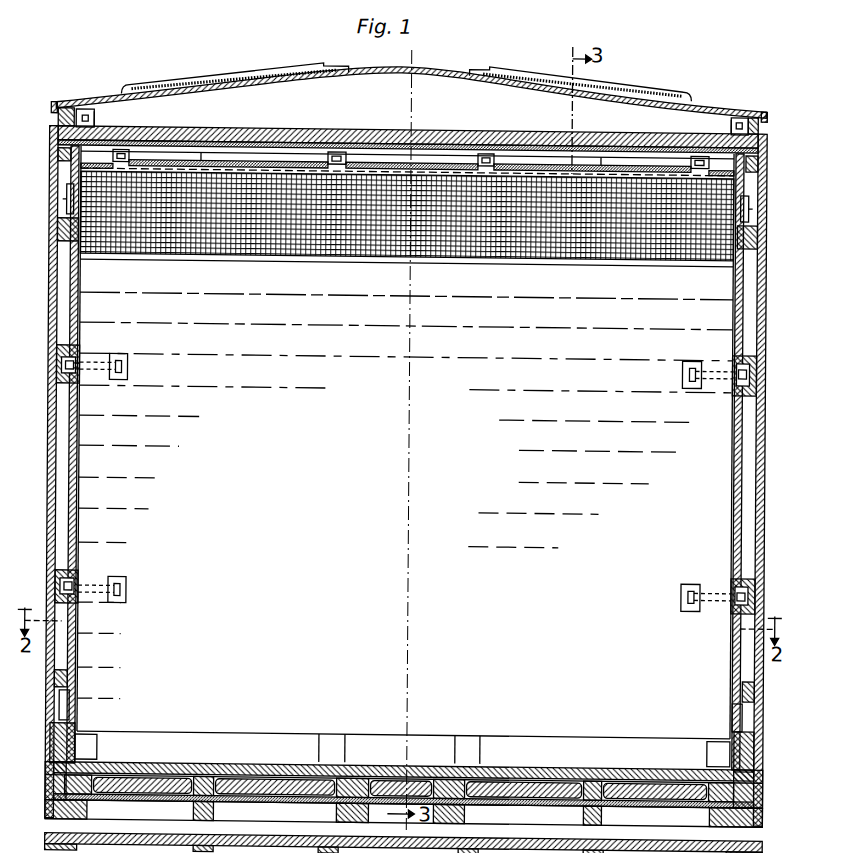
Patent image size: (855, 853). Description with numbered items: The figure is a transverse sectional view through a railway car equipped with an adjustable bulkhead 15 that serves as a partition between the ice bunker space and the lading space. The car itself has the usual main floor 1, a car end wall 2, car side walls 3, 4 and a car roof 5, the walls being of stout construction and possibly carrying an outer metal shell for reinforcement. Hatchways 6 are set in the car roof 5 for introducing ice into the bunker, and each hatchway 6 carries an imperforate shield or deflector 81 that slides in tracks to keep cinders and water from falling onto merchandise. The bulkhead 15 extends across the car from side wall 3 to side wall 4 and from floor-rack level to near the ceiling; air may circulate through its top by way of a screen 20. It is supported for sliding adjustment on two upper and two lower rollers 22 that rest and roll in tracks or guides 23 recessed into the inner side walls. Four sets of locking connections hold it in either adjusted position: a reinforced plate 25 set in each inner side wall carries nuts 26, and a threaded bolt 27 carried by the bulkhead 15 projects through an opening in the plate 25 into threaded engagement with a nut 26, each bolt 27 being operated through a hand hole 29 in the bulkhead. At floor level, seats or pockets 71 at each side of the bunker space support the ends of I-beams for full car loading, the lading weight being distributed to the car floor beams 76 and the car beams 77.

The main floor 1 is at (546, 766).
The car end wall 2 is at (78, 843).
The car side wall 3 is at (62, 458).
The car side wall 4 is at (748, 467).
The car roof 5 is at (436, 74).
The hatchways 6 is at (283, 76).
The adjustable bulkhead 15 is at (95, 306).
The screen 20 is at (505, 258).
The rollers 22 is at (66, 206).
The tracks or guides 23 is at (62, 194).
The reinforced plate 25 is at (80, 379).
The nuts 26 is at (63, 376).
The threaded bolt 27 is at (128, 372).
The hand hole 29 is at (120, 357).
The seats or pockets 71 is at (98, 751).
The car floor beams 76 is at (339, 814).
The car beams 77 is at (92, 812).
The shield or deflector 81 is at (262, 163).